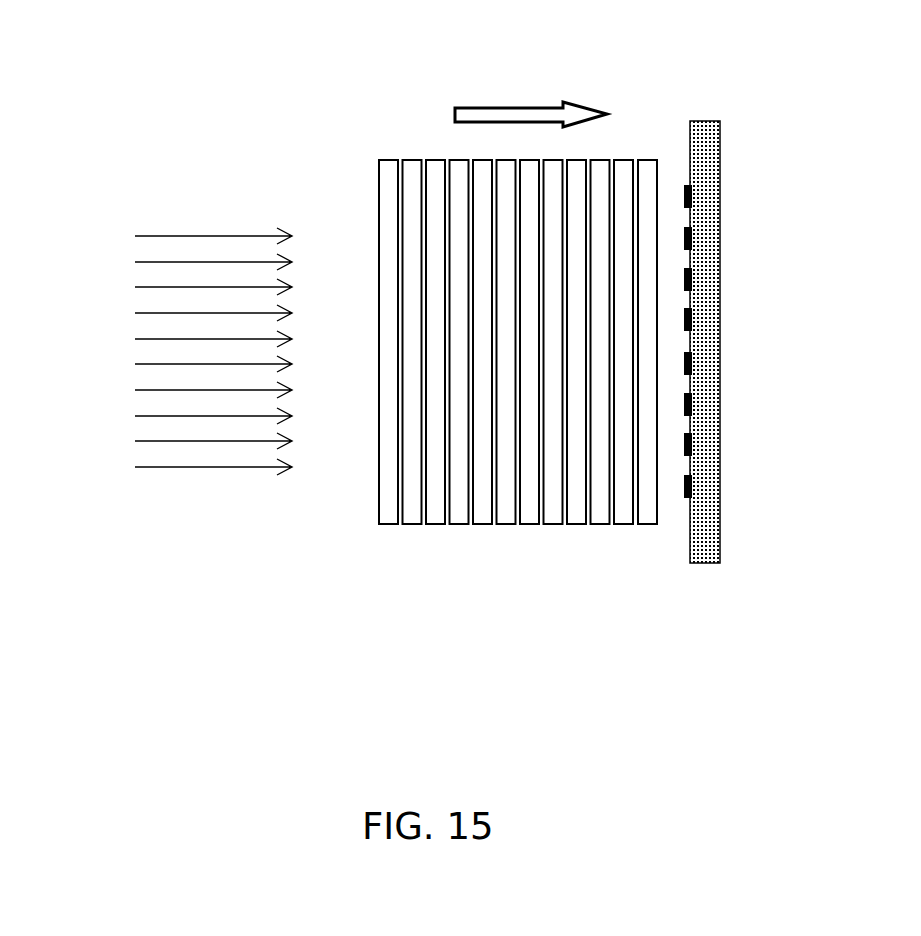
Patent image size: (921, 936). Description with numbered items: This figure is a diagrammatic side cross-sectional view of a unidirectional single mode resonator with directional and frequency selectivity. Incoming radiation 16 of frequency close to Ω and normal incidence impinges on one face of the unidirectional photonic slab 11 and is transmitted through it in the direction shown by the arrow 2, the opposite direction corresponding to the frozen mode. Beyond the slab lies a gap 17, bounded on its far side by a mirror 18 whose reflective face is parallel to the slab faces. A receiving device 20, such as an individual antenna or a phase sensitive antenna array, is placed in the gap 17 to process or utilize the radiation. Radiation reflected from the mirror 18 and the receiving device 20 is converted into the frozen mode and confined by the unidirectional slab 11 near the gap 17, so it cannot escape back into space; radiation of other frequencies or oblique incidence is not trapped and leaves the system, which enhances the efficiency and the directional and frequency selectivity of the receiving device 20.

The arrow 2 is at (467, 93).
The unidirectional photonic slab 11 is at (522, 524).
The incoming radiation 16 is at (167, 475).
The gap 17 is at (670, 165).
The mirror 18 is at (713, 563).
The receiving device 20 is at (683, 450).